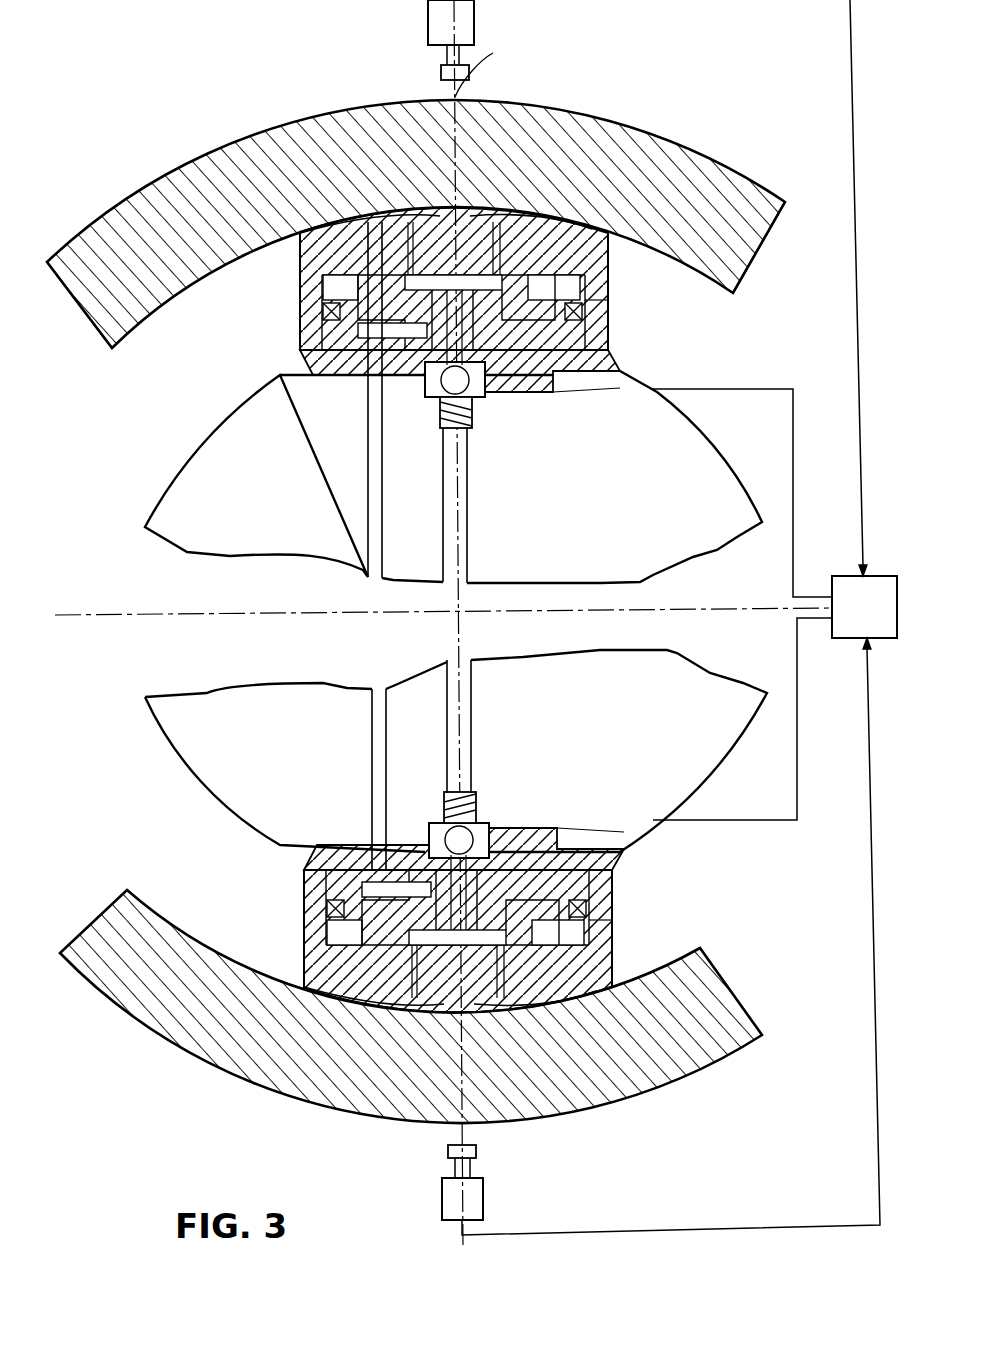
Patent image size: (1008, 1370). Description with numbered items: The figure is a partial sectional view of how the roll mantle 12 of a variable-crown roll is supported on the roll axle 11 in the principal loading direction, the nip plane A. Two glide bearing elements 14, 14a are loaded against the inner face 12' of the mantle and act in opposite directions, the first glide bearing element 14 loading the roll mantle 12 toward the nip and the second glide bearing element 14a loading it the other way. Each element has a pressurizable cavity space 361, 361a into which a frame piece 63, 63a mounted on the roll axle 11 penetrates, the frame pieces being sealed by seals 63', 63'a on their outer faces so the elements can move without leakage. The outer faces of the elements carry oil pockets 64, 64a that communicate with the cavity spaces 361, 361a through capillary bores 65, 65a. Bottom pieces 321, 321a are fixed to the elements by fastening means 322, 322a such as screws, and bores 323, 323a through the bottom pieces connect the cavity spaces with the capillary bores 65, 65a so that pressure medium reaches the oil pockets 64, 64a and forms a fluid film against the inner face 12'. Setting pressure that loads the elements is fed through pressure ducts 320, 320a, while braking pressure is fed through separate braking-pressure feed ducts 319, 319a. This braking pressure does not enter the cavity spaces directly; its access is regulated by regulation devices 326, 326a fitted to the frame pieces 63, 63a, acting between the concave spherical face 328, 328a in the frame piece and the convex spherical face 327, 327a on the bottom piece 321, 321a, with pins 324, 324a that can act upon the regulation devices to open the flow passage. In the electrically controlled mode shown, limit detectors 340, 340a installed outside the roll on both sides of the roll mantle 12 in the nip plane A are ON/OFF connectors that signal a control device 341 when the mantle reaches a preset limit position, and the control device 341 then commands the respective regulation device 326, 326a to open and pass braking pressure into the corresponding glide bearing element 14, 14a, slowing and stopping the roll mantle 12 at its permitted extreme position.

The roll axle 11 is at (207, 457).
The roll mantle 12 is at (416, 207).
The inner face of the roll mantle 12' is at (747, 261).
The first glide bearing element 14 is at (316, 265).
The second glide bearing element 14a is at (327, 967).
The frame piece 63 is at (607, 359).
The seal 63' is at (627, 308).
The frame piece 63a is at (585, 873).
The seal 63'a is at (639, 905).
The oil pocket 64 is at (353, 220).
The oil pocket 64a is at (345, 1018).
The capillary bore 65 is at (417, 213).
The capillary bore 65a is at (425, 1018).
The braking-pressure feed duct 319 is at (458, 530).
The braking-pressure feed duct 319a is at (468, 694).
The pressure duct 320 is at (370, 503).
The pressure duct 320a is at (374, 705).
The bottom piece 321 is at (523, 290).
The bottom piece 321a is at (540, 928).
The fastening means 322 is at (385, 227).
The fastening means 322a is at (388, 1013).
The bore 323 is at (527, 378).
The bore 323a is at (527, 842).
The pin 324 is at (330, 338).
The pin 324a is at (306, 874).
The regulation device 326 is at (477, 432).
The regulation device 326a is at (483, 788).
The convex spherical face 327 is at (353, 386).
The convex spherical face 327a is at (360, 845).
The concave spherical face 328 is at (488, 397).
The concave spherical face 328a is at (488, 825).
The limit detector 340 is at (428, 28).
The limit detector 340a is at (448, 1203).
The control device 341 is at (853, 597).
The cavity space 361 is at (340, 290).
The cavity space 361a is at (309, 926).
The nip plane A is at (479, 65).